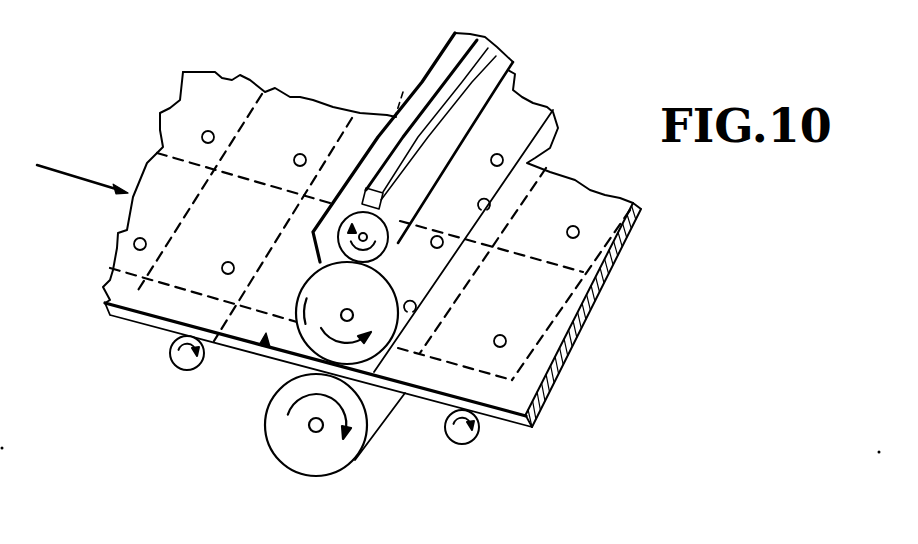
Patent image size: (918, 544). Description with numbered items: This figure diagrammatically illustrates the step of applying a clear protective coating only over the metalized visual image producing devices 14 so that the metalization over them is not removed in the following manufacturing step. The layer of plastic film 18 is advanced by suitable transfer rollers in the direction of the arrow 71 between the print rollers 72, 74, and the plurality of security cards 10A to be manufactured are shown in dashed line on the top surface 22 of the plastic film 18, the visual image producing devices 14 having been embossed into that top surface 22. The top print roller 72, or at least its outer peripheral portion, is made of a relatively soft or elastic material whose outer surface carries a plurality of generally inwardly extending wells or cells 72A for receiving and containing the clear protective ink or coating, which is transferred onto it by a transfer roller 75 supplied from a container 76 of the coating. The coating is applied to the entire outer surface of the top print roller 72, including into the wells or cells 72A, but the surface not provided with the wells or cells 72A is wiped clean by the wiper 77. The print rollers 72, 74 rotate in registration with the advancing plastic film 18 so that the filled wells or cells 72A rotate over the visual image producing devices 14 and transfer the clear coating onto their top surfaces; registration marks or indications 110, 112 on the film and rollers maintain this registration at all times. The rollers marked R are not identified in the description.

The security cards 10A is at (262, 90).
The visual image producing devices 14 is at (303, 152).
The layer of plastic film 18 is at (165, 115).
The top surface 22 is at (255, 249).
The arrow 71 is at (60, 168).
The top print roller 72 is at (506, 76).
The wells or cells 72A is at (533, 102).
The print roller 74 is at (288, 466).
The transfer roller 75 is at (432, 86).
The container 76 is at (492, 58).
The wiper 77 is at (398, 86).
The registration marks 110 is at (274, 357).
The registration marks 112 is at (347, 313).
The idler rollers R is at (186, 370).